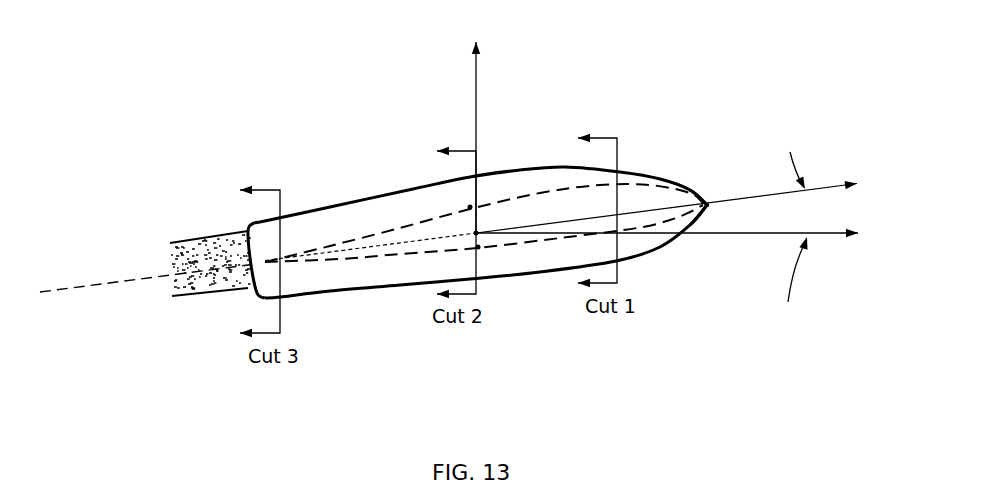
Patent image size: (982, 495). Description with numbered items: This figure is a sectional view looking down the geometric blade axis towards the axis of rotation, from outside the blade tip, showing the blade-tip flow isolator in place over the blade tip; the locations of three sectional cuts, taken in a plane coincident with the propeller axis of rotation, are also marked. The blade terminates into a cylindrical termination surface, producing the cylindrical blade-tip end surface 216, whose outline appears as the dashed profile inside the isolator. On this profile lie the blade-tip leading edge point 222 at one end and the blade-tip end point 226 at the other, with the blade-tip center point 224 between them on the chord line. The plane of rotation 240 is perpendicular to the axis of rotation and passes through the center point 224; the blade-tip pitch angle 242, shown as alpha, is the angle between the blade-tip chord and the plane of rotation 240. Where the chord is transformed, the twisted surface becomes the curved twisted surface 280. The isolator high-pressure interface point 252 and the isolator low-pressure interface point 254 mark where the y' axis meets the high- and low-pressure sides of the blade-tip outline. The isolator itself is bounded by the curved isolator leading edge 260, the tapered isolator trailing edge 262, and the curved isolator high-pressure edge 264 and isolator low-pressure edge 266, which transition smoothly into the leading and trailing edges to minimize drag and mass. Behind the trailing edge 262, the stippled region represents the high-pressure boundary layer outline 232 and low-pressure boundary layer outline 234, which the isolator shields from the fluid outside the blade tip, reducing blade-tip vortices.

The cylindrical blade-tip end surface 216 is at (636, 192).
The blade-tip leading edge point 222 is at (707, 205).
The blade-tip center point 224 is at (476, 233).
The blade-tip end point 226 is at (247, 270).
The high-pressure boundary layer outline 232 is at (203, 300).
The low-pressure boundary layer outline 234 is at (177, 243).
The plane of rotation 240 is at (765, 237).
The blade-tip pitch angle 242 is at (807, 267).
The isolator high-pressure interface point 252 is at (480, 250).
The isolator low-pressure interface point 254 is at (470, 207).
The isolator leading edge 260 is at (697, 197).
The isolator trailing edge 262 is at (246, 257).
The isolator high-pressure edge 264 is at (542, 275).
The isolator low-pressure edge 266 is at (567, 168).
The curved twisted surface 280 is at (430, 248).